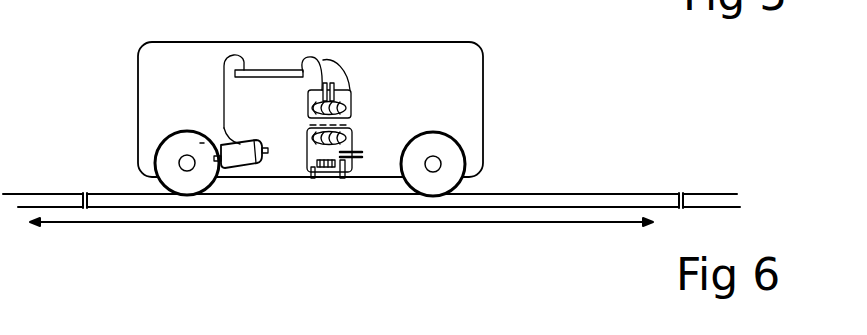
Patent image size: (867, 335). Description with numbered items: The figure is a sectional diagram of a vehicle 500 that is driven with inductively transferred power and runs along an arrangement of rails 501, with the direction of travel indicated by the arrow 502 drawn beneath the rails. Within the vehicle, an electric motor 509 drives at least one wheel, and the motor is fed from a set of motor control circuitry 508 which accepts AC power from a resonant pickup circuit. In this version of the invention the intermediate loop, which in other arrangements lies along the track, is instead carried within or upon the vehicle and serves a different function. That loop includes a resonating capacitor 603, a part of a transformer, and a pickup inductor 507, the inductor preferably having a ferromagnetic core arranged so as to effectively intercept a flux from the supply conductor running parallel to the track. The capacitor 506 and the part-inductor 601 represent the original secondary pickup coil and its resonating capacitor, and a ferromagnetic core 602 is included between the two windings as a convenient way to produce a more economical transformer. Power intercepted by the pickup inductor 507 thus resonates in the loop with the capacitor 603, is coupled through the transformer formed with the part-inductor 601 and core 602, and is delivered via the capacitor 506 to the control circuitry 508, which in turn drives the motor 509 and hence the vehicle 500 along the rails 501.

The vehicle 500 is at (479, 46).
The arrangement of rails 501 is at (681, 193).
The direction of travel arrow 502 is at (341, 242).
The capacitor 506 is at (357, 38).
The pickup inductor 507 is at (309, 176).
The motor control circuitry 508 is at (277, 77).
The electric motor 509 is at (230, 143).
The part-inductor 601 is at (357, 100).
The ferromagnetic core 602 is at (352, 128).
The resonating capacitor 603 is at (363, 155).